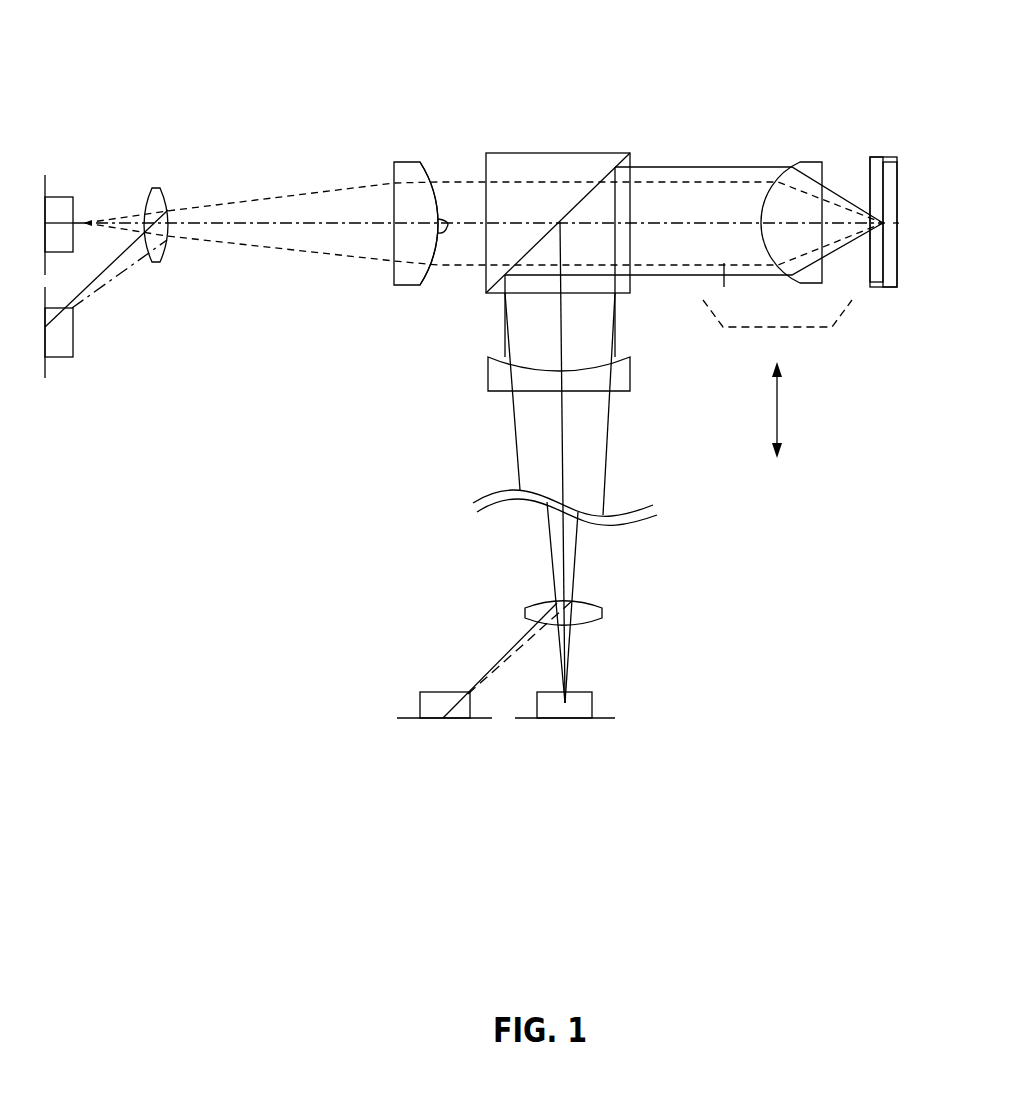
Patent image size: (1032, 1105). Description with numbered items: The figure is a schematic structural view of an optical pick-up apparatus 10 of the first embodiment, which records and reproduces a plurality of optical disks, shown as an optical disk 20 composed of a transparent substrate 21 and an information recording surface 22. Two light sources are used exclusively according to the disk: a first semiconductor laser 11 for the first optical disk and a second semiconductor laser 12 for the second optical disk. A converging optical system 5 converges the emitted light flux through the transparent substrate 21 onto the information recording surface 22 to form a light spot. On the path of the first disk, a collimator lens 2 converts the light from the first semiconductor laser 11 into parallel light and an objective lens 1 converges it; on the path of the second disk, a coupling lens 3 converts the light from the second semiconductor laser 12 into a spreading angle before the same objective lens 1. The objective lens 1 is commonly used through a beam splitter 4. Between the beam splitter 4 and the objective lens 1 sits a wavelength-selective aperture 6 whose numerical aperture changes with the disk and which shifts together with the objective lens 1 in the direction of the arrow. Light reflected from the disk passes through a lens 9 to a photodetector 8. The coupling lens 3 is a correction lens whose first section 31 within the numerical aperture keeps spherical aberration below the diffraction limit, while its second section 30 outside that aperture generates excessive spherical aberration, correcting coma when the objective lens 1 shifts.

The objective lens 1 is at (805, 161).
The collimator lens 2 is at (488, 374).
The coupling lens 3 is at (405, 162).
The beam splitter 4 is at (515, 153).
The converging optical system 5 is at (479, 296).
The aperture 6 is at (722, 181).
The photodetector 8 is at (73, 340).
The lens 9 is at (155, 188).
The optical pick-up apparatus 10 is at (583, 120).
The first semiconductor laser 11 is at (592, 705).
The second semiconductor laser 12 is at (62, 196).
The optical disk 20 is at (890, 288).
The transparent substrate 21 is at (876, 157).
The information recording surface 22 is at (892, 162).
The second section 30 is at (433, 171).
The first section 31 is at (447, 226).